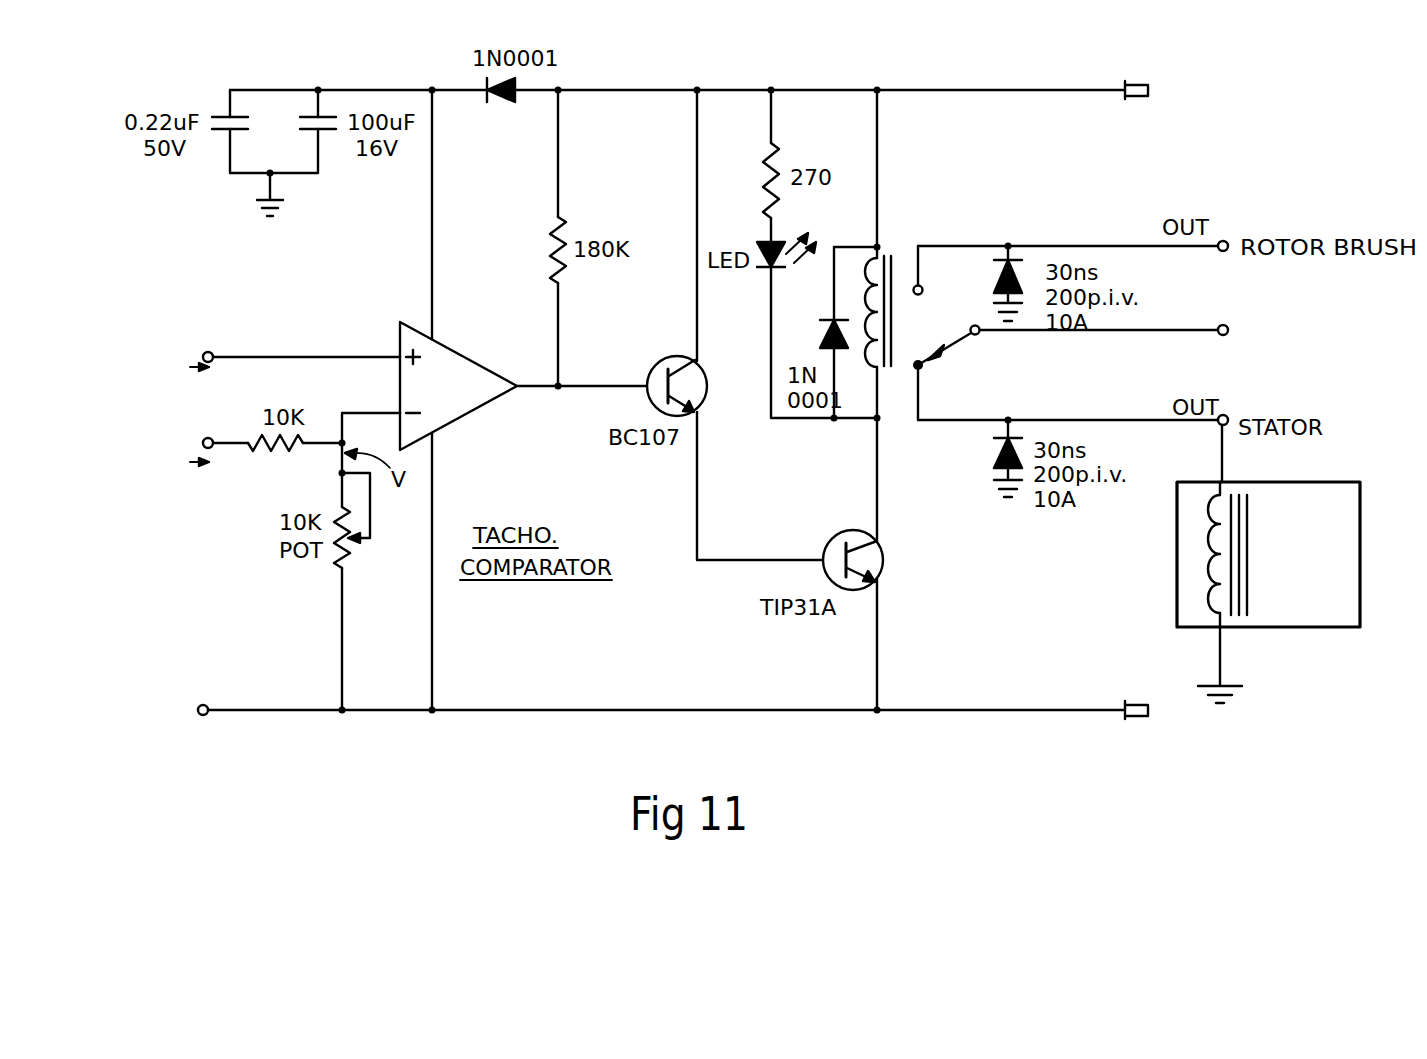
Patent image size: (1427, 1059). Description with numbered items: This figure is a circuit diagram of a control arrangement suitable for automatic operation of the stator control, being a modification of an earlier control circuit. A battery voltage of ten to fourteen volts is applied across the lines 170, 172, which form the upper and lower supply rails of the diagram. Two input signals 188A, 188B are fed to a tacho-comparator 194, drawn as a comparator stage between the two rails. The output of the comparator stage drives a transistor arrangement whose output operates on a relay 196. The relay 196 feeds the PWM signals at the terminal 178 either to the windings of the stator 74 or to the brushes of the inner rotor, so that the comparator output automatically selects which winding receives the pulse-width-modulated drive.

The line 170 is at (836, 88).
The line 172 is at (988, 710).
The terminal 178 is at (1229, 337).
The tacho comparator input A 188A is at (202, 445).
The tacho comparator input B 188B is at (208, 351).
The tacho comparator 194 is at (497, 410).
The relay 196 is at (944, 347).
The stator 74 is at (1294, 629).